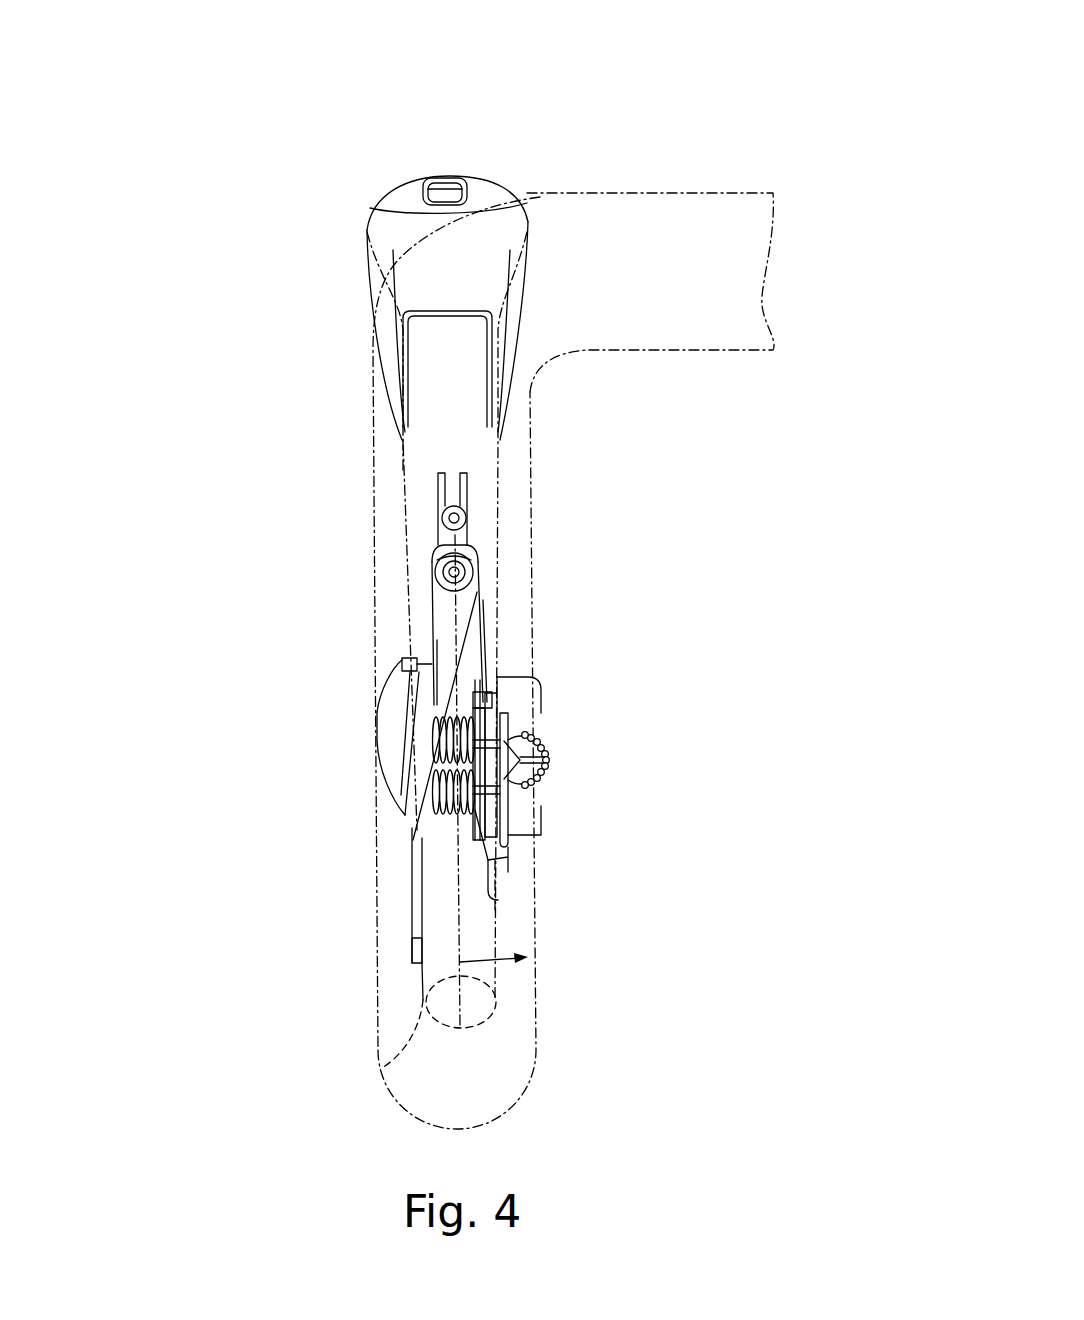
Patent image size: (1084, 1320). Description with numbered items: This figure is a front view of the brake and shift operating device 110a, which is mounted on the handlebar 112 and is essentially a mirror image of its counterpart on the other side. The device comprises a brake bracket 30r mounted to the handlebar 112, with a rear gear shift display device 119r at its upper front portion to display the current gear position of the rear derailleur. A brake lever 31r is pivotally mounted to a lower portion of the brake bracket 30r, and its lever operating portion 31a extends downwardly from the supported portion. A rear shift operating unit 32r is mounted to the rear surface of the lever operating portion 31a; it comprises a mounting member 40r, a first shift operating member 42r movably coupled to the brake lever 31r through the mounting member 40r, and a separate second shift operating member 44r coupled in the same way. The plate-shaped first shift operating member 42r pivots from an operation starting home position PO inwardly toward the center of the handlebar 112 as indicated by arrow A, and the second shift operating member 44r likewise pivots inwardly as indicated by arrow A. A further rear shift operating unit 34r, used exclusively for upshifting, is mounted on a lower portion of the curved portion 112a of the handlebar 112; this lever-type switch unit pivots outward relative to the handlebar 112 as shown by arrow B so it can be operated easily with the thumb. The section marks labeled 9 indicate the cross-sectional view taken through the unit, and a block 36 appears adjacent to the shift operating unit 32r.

The brake and shift operating device 110a is at (368, 188).
The handlebar 112 is at (695, 150).
The curved portion 112a is at (530, 465).
The rear gear shift display device 119r is at (450, 175).
The brake bracket 30r is at (373, 247).
The brake lever 31r is at (404, 475).
The lever operating portion 31a is at (420, 873).
The rear shift operating unit 32r is at (546, 715).
The rear shift operating unit 34r is at (550, 807).
The mounting block 36 is at (541, 690).
The mounting member 40r is at (440, 517).
The first shift operating member 42r is at (377, 712).
The second shift operating member 44r is at (413, 847).
The section line 9 is at (372, 793).
The arrow A is at (500, 962).
The arrow B is at (498, 900).
The operation starting (home) position PO is at (383, 1068).